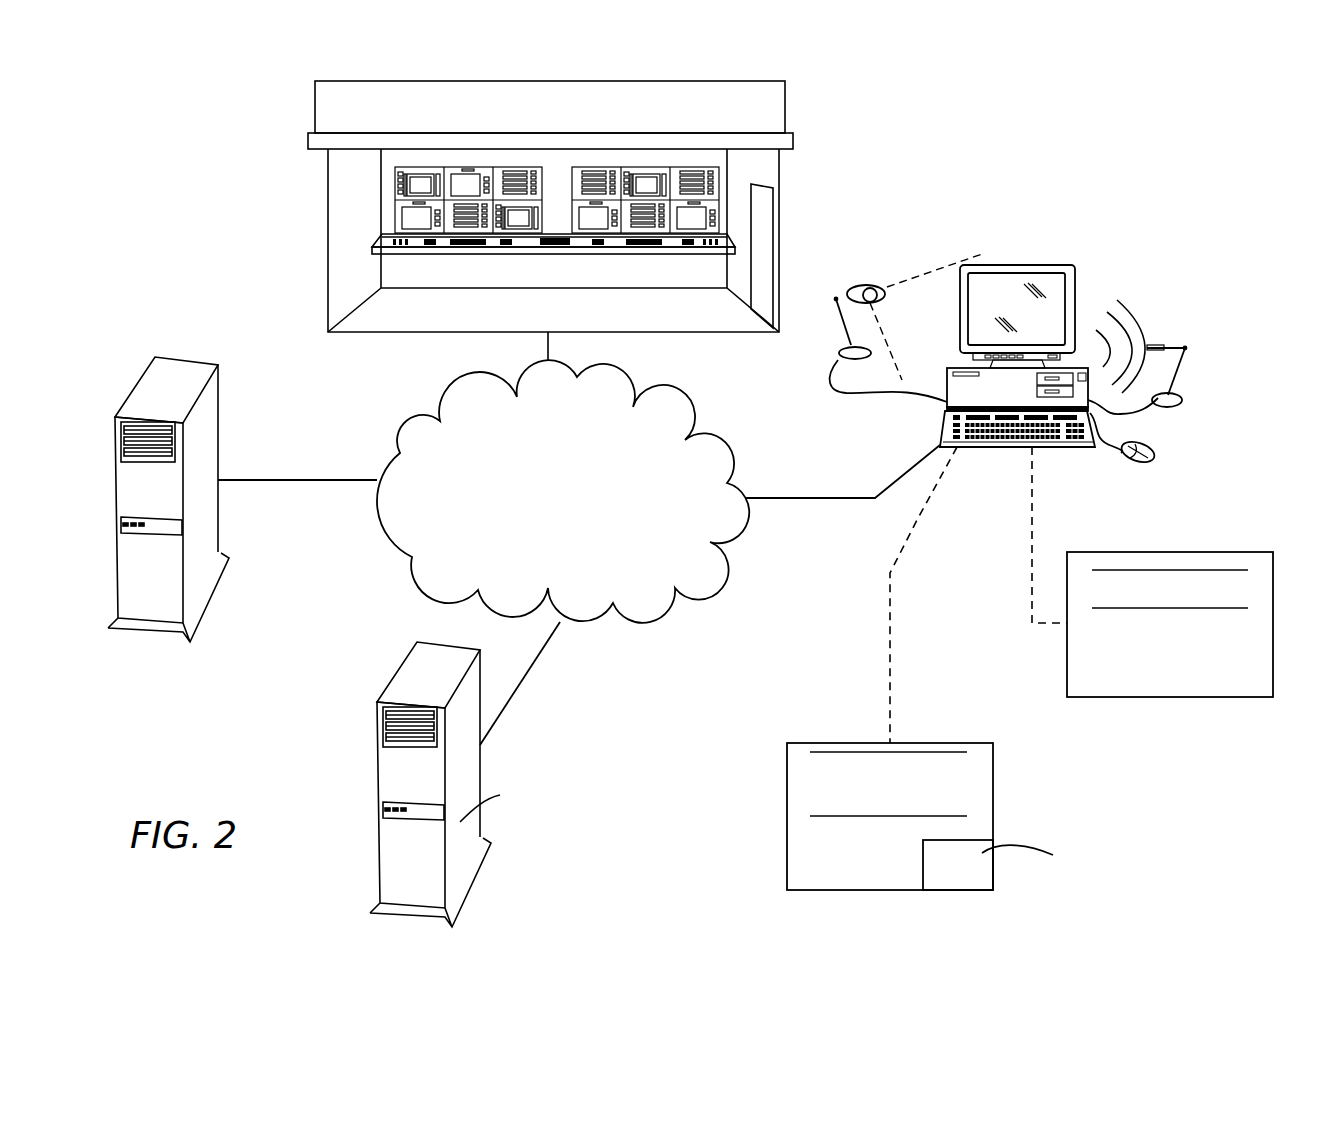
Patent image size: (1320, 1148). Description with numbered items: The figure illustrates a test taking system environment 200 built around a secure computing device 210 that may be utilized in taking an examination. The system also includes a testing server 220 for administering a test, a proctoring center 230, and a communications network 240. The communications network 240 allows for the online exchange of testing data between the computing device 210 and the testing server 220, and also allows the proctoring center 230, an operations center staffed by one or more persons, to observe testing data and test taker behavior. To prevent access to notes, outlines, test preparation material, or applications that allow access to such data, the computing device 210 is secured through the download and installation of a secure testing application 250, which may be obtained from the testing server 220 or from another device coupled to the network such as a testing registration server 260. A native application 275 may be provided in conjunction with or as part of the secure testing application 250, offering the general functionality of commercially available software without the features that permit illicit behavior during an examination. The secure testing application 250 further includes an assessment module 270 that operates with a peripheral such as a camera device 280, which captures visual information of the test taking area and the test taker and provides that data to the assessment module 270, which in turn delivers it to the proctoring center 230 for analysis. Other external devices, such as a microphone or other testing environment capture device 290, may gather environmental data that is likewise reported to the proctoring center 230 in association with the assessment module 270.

The test taking system environment 200 is at (233, 301).
The secure computing device 210 is at (1010, 304).
The testing server 220 is at (190, 400).
The proctoring center 230 is at (567, 114).
The communications network 240 is at (578, 477).
The secure testing application 250 is at (847, 849).
The testing registration server 260 is at (449, 687).
The assessment module 270 is at (977, 877).
The native application 275 is at (1248, 680).
The camera device 280 is at (870, 287).
The testing environment capture device 290 is at (1187, 360).